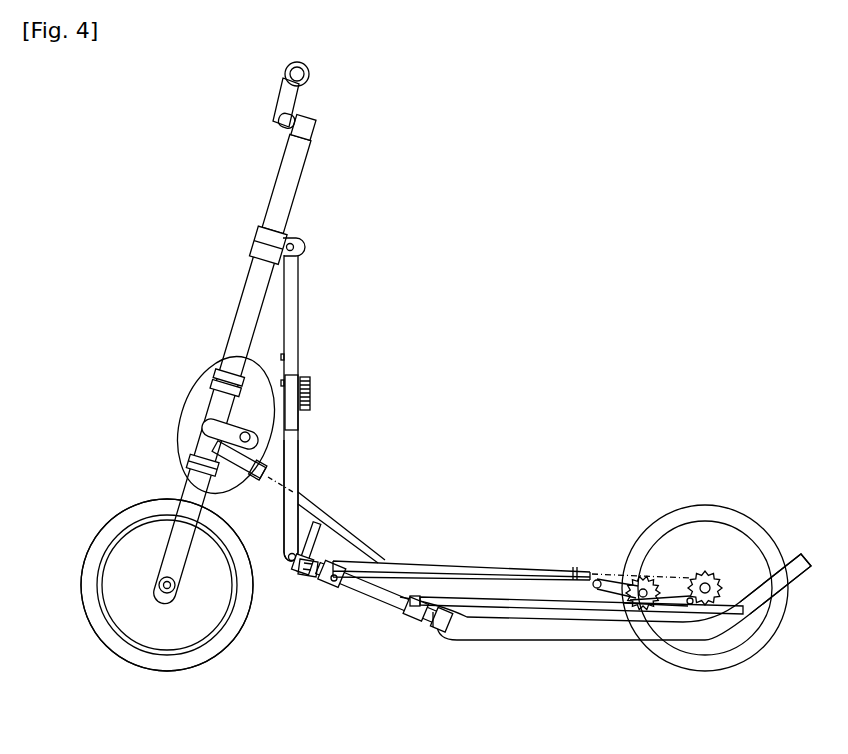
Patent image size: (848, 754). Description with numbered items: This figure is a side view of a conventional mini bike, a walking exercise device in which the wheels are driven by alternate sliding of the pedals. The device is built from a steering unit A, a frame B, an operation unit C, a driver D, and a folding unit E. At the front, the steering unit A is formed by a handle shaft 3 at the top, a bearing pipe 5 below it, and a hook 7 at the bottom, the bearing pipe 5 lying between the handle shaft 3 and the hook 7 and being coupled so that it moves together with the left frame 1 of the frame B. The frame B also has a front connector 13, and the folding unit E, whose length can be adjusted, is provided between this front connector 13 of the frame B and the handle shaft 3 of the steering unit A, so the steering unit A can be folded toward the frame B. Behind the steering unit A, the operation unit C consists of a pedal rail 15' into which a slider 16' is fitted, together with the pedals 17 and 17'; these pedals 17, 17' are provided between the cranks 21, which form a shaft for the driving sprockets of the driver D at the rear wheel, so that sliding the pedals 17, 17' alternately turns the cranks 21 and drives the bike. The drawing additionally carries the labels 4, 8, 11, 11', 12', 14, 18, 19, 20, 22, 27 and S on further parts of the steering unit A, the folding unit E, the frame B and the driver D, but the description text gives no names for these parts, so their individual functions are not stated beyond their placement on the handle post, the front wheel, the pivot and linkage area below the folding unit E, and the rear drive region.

The left frame 1 is at (363, 550).
The handle shaft 3 is at (247, 310).
The handle 4 is at (284, 96).
The bearing pipe 5 is at (217, 405).
The hook 7 is at (177, 550).
The front tire 8 is at (228, 637).
The locking unit 11 is at (338, 526).
The hinge pin 11' is at (279, 591).
The rear pivot bracket 12' is at (462, 653).
The front connector 13 is at (306, 580).
The link member 14 is at (436, 633).
The pedal rail 15' is at (383, 612).
The slider 16' is at (340, 605).
The pedal 17 is at (576, 546).
The pedal 17' is at (511, 537).
The lower support bar 18 is at (300, 458).
The upper support bar 19 is at (298, 304).
The adjustment gear 20 is at (312, 396).
The crank 21 is at (643, 608).
The ratchet gear 22 is at (680, 580).
The rear fender brake 27 is at (767, 527).
The steering unit A is at (230, 244).
The frame B is at (382, 524).
The operation unit C is at (430, 551).
The driver D is at (735, 488).
The folding unit E is at (320, 367).
The hinge section S is at (185, 402).